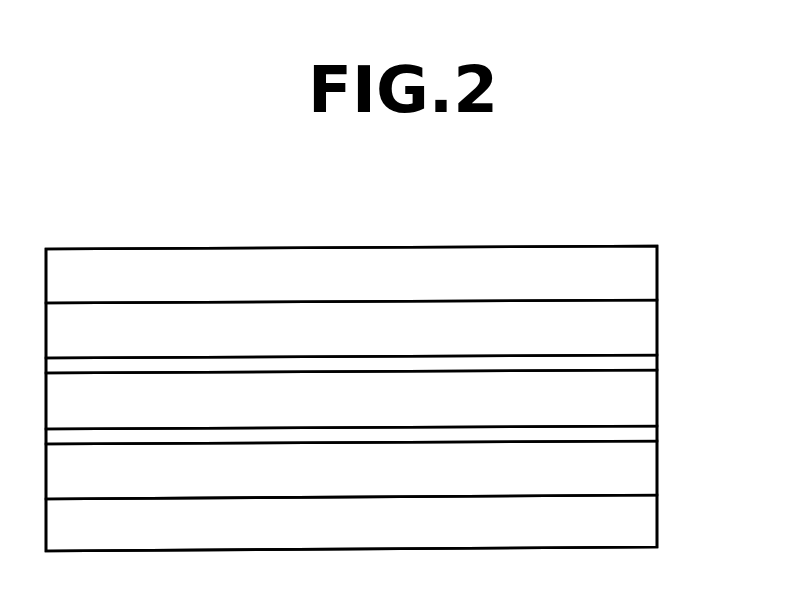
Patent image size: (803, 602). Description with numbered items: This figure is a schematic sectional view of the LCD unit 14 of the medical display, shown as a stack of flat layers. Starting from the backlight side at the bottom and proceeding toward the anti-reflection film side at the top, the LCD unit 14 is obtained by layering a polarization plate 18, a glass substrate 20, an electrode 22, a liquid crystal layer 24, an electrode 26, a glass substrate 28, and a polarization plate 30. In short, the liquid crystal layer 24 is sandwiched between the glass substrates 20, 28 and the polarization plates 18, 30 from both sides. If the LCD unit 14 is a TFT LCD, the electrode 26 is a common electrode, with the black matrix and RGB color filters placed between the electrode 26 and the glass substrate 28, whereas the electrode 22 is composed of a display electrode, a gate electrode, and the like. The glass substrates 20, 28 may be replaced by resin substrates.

The LCD unit 14 is at (559, 242).
The polarization plate 18 is at (648, 528).
The glass substrate 20 is at (648, 476).
The electrode 22 is at (648, 433).
The liquid crystal layer 24 is at (648, 401).
The electrode 26 is at (648, 364).
The glass substrate 28 is at (648, 317).
The polarization plate 30 is at (648, 262).